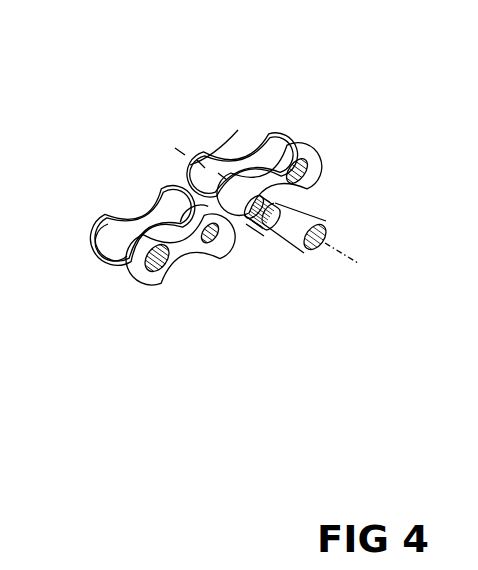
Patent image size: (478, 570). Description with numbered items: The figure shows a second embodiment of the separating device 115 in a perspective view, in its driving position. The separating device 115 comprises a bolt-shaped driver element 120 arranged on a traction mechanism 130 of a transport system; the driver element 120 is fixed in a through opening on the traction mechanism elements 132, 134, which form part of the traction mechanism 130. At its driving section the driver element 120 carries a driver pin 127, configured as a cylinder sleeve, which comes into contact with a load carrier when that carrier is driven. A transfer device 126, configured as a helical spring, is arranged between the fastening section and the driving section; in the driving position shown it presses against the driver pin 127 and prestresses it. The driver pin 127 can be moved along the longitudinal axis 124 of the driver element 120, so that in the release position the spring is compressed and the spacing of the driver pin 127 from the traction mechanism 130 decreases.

The separating device 115 is at (109, 59).
The driver element 120 is at (329, 241).
The longitudinal axis 124 is at (345, 258).
The transfer device 126 is at (260, 235).
The driver pin 127 is at (296, 230).
The traction mechanism 130 is at (312, 158).
The traction mechanism element 132 is at (281, 134).
The traction mechanism element 134 is at (190, 165).